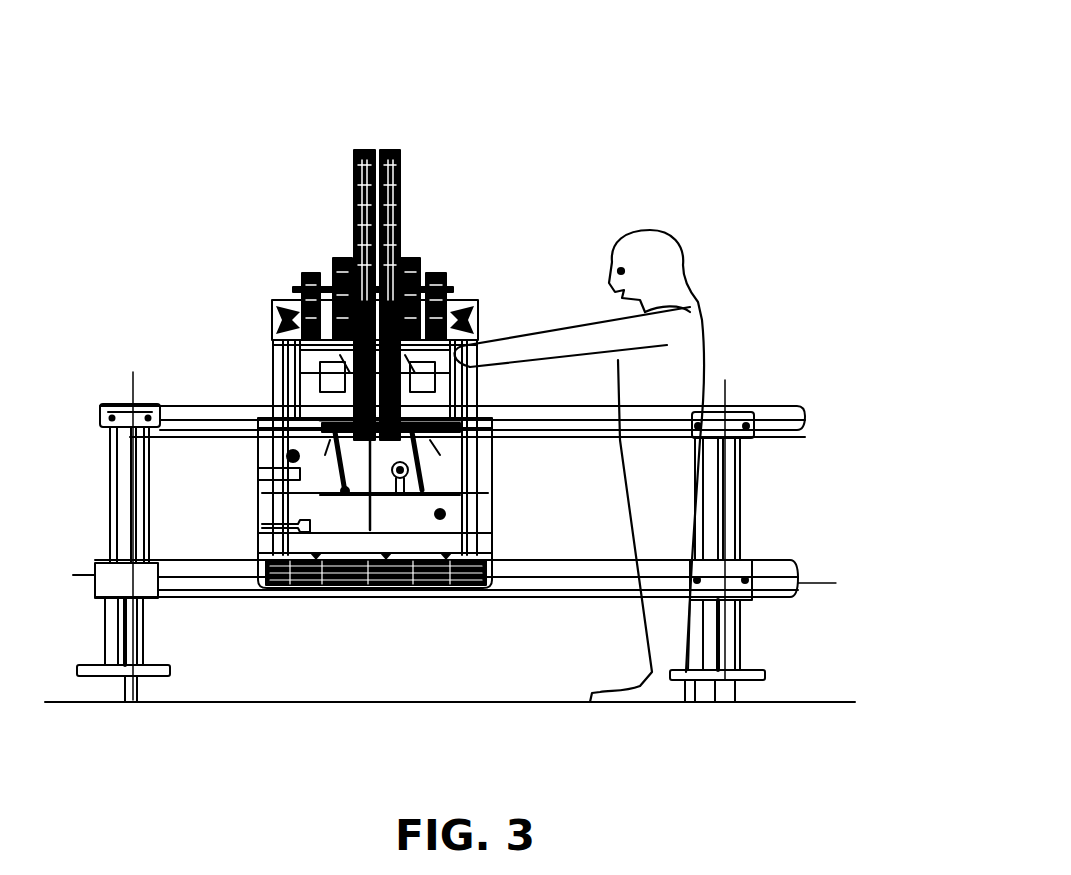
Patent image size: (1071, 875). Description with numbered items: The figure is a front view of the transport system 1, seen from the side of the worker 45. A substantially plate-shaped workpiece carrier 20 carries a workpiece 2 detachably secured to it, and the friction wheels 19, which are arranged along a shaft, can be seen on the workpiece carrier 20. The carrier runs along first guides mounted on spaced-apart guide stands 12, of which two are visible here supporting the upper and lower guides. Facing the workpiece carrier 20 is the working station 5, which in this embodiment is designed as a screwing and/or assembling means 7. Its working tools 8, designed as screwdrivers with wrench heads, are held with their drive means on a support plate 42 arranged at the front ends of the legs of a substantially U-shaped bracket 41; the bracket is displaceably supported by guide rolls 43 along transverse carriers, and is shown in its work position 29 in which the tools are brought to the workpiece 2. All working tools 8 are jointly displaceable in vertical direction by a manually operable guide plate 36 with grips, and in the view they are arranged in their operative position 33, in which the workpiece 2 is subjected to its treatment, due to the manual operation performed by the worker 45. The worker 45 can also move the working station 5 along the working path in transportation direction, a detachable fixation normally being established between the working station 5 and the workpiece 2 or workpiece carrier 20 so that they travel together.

The transport system 1 is at (380, 74).
The workpiece 2 is at (428, 452).
The working station 5 is at (408, 251).
The screwing and/or assembling means 7 is at (431, 126).
The working tools 8 is at (330, 393).
The guide stand 12 is at (133, 702).
The friction wheels 19 is at (413, 588).
The workpiece carrier 20 is at (447, 532).
The work position 29 is at (420, 288).
The operative position 33 is at (420, 358).
The guide plate 36 is at (437, 378).
The U-shaped bracket 41 is at (275, 311).
The support plate 42 is at (411, 258).
The guide rolls 43 is at (293, 303).
The worker 45 is at (664, 216).